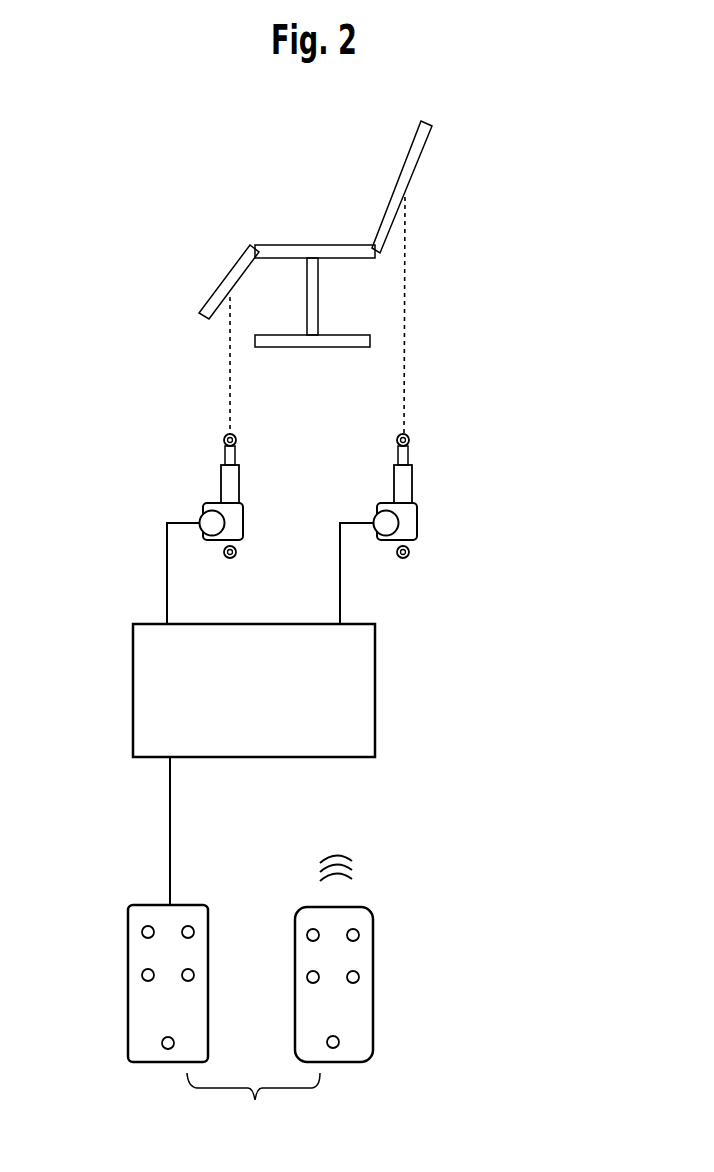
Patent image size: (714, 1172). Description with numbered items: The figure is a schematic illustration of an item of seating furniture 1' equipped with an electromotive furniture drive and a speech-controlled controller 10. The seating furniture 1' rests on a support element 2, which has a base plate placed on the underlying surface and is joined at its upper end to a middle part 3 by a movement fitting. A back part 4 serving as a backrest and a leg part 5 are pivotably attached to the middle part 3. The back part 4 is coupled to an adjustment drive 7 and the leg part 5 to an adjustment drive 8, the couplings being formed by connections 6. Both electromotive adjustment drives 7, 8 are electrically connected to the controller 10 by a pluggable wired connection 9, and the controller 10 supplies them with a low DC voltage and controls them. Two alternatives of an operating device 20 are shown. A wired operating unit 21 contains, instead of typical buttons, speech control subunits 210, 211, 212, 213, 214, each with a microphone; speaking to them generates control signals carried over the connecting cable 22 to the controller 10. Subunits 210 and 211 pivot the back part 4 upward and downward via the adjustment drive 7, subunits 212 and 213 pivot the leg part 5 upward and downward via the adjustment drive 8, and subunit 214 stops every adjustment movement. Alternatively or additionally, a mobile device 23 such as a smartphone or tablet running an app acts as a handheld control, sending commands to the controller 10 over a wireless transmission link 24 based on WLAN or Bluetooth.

The item of seating furniture 1' is at (321, 266).
The support element 2 is at (329, 356).
The seat cushion 3 is at (278, 245).
The back part 4 is at (432, 144).
The leg part 5 is at (201, 306).
The connections 6 is at (230, 412).
The adjustment drive 7 is at (408, 514).
The adjustment drive 8 is at (235, 512).
The wired connection 9 is at (168, 598).
The controller 10 is at (368, 692).
The operating device 20 is at (248, 1005).
The operating unit 21 is at (128, 1017).
The connecting cable 22 is at (168, 802).
The mobile device 23 is at (374, 1033).
The wireless transmission link 24 is at (349, 856).
The speech control subunit 210 is at (142, 929).
The speech control subunit 211 is at (142, 976).
The speech control subunit 212 is at (193, 929).
The speech control subunit 213 is at (193, 973).
The speech control subunit 214 is at (166, 1050).